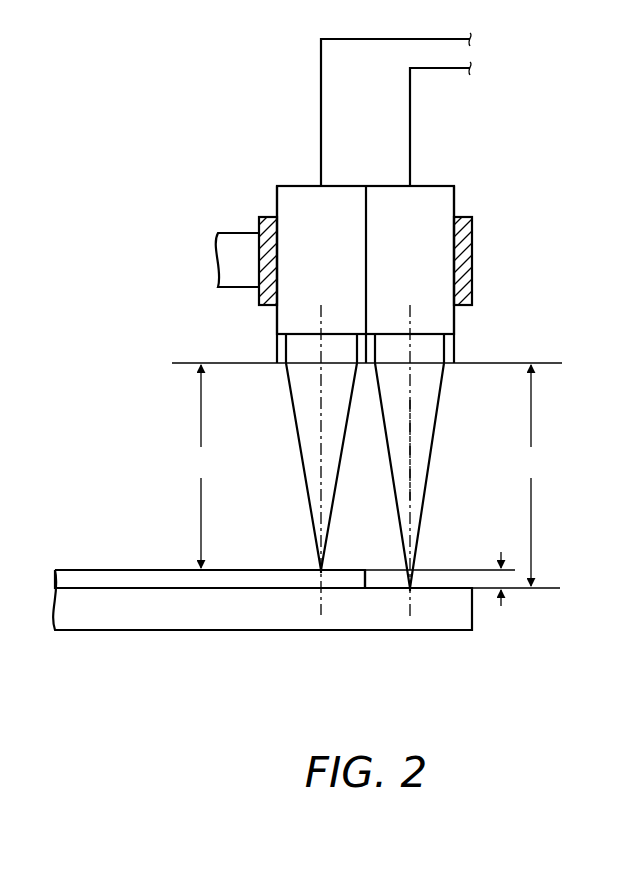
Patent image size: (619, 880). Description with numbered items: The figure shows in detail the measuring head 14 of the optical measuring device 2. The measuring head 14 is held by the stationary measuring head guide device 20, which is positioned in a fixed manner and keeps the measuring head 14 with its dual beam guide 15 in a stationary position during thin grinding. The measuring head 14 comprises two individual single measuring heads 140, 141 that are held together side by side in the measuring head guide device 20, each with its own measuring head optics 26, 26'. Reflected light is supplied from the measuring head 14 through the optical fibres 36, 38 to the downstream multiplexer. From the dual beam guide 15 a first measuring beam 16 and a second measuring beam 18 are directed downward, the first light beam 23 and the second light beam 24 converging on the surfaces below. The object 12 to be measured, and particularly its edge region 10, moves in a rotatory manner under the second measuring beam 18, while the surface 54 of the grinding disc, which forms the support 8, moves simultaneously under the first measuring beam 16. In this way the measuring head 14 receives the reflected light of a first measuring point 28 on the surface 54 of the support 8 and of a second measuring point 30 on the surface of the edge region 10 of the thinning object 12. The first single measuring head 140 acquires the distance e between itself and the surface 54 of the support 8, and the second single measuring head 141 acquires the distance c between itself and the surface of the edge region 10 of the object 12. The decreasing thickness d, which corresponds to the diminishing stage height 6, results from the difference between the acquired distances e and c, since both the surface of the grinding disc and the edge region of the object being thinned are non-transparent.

The optical measuring device 2 is at (229, 88).
The optical fibre 36 is at (321, 117).
The optical fibre 38 is at (410, 117).
The measuring head 14 is at (455, 183).
The single measuring head 141 is at (278, 203).
The single measuring head 140 is at (454, 203).
The measuring head guide device 20 is at (472, 262).
The measuring head optics 26' is at (289, 343).
The measuring head optics 26 is at (439, 343).
The second measuring beam 18 is at (305, 411).
The first measuring beam 16 is at (428, 411).
The dual beam guide 15 is at (414, 468).
The second light beam 24 is at (320, 568).
The first light beam 23 is at (411, 585).
The edge region 10 is at (345, 567).
The object 12 is at (130, 578).
The support 8 is at (130, 625).
The surface of grinding disc 54 is at (444, 584).
The stage height 6 is at (368, 578).
The second measuring point 30 is at (320, 573).
The first measuring point 28 is at (411, 591).
The distance c is at (201, 466).
The distance e is at (531, 475).
The thickness d is at (502, 580).